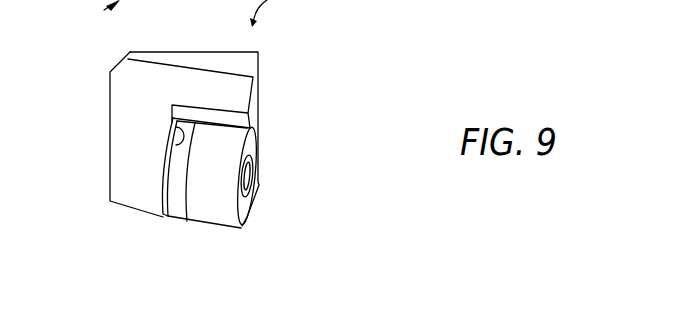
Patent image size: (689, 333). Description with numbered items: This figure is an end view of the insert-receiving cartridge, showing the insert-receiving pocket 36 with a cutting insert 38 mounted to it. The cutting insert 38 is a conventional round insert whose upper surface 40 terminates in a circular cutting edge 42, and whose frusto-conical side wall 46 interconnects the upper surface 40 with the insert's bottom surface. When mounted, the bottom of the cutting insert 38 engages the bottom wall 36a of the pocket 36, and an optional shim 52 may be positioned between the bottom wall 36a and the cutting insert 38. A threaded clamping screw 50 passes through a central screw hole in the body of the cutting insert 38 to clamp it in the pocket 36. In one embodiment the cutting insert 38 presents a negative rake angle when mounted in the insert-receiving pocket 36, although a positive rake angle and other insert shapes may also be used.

The insert-receiving pocket 36 is at (156, 175).
The bottom wall 36a is at (163, 144).
The cutting insert 38 is at (181, 198).
The upper surface 40 is at (251, 152).
The circular cutting edge 42 is at (238, 228).
The frusto-conical side wall 46 is at (212, 208).
The threaded clamping screw 50 is at (247, 176).
The shim 52 is at (177, 202).